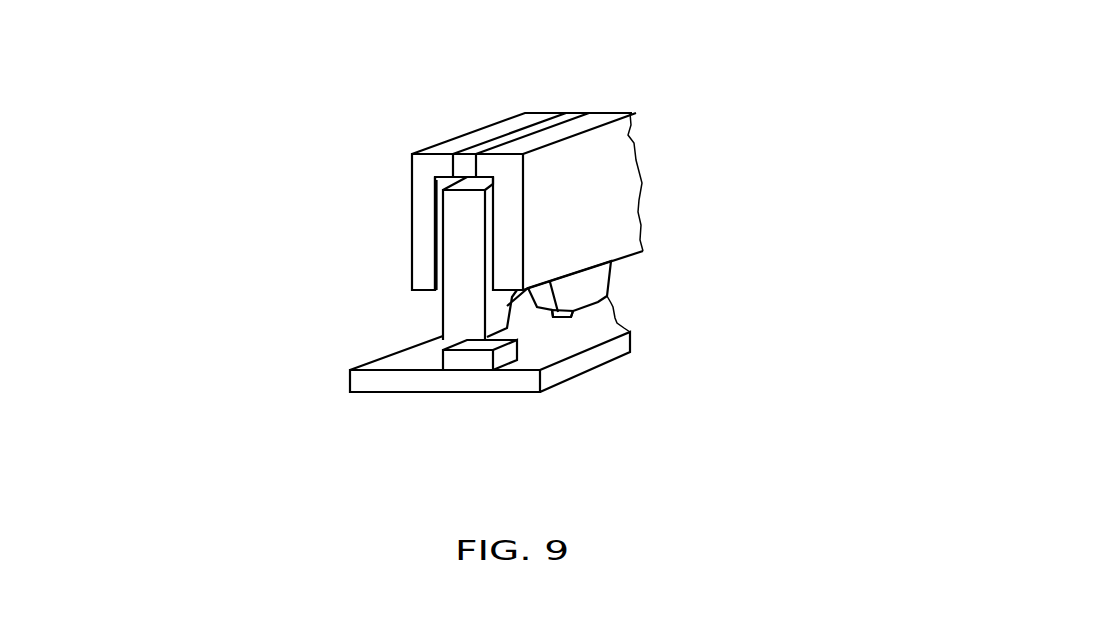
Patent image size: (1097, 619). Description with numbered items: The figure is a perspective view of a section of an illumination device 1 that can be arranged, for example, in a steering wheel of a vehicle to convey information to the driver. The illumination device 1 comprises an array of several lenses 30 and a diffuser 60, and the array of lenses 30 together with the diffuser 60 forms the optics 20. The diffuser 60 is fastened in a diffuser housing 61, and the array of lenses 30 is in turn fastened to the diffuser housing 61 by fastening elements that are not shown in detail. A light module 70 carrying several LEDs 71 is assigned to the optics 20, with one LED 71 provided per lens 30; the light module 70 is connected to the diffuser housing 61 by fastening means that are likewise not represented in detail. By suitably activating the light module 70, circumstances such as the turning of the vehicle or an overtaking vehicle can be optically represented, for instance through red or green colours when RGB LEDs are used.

The illumination device 1 is at (757, 72).
The optics 20 is at (365, 167).
The lens 30 is at (468, 302).
The diffuser 60 is at (467, 162).
The diffuser housing 61 is at (420, 272).
The light module 70 is at (395, 383).
The LED 71 is at (607, 298).